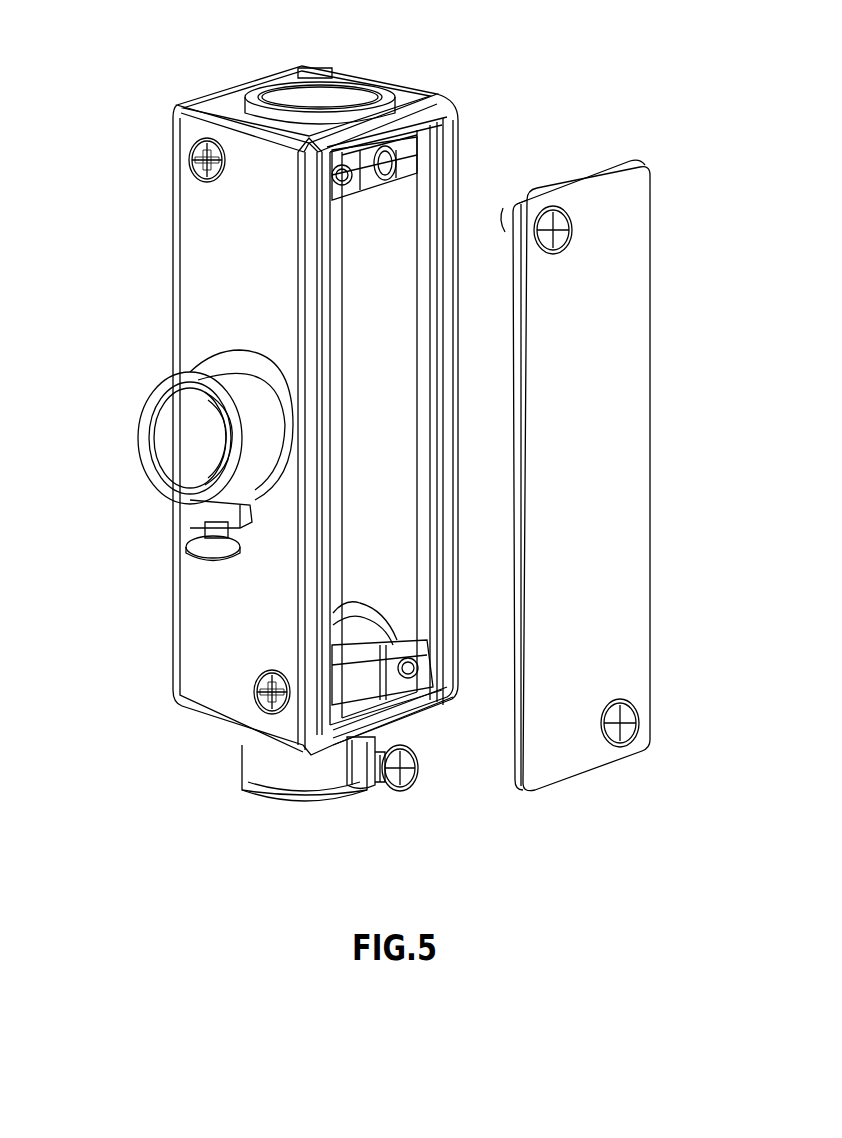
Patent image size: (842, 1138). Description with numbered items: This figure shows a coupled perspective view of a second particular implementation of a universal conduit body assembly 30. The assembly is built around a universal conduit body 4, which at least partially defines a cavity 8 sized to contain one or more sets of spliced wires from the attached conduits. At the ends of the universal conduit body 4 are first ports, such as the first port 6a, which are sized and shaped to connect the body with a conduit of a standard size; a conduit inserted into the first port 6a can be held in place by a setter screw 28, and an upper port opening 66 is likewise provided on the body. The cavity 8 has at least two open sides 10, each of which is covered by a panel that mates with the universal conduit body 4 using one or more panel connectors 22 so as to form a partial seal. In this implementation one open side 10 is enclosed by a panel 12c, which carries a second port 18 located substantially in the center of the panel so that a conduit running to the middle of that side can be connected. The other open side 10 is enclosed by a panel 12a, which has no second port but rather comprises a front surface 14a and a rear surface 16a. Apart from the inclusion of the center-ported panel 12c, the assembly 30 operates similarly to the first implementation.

The universal conduit body assembly 30 is at (116, 102).
The universal conduit body 4 is at (447, 225).
The first port 6a is at (290, 780).
The upper collar / threaded opening 66 is at (365, 90).
The cavity 8 is at (388, 432).
The open side 10 is at (400, 545).
The panel 12a is at (632, 410).
The panel 12c is at (192, 305).
The front surface 14a is at (605, 446).
The rear surface 16a is at (618, 165).
The second port 18 is at (165, 440).
The panel connector 22 is at (188, 160).
The setter screw 28 is at (190, 541).